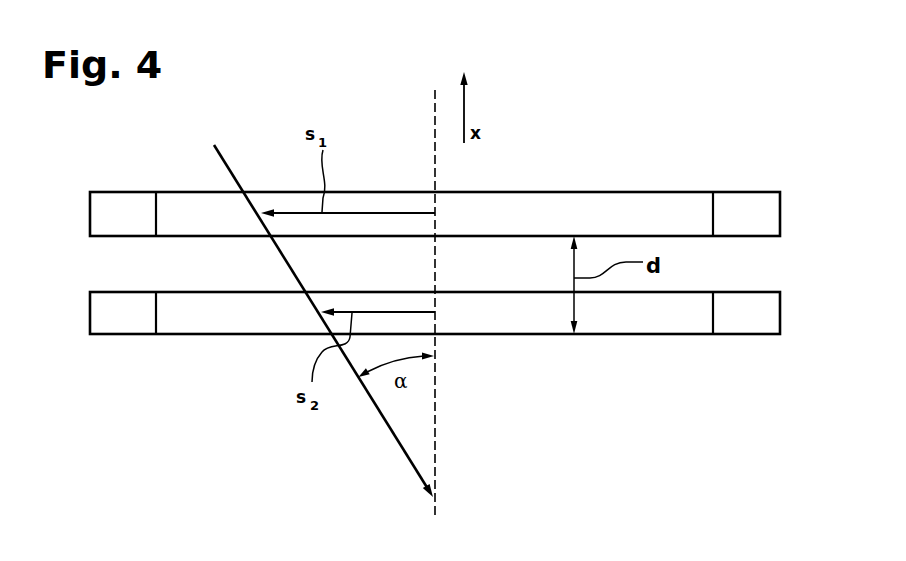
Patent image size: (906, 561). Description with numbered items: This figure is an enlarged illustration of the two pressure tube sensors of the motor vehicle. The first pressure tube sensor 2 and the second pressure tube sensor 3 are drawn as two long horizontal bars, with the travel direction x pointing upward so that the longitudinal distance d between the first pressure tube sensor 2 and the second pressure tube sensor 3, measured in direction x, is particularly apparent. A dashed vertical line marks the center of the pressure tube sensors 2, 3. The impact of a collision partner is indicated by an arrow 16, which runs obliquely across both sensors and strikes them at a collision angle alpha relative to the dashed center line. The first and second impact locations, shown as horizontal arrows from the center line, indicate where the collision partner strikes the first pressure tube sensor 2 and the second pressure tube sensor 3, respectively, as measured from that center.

The first pressure tube sensor 2 is at (748, 203).
The second pressure tube sensor 3 is at (749, 320).
The arrow 16 is at (388, 428).